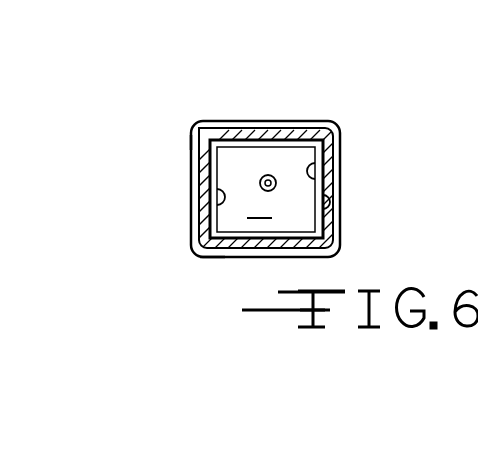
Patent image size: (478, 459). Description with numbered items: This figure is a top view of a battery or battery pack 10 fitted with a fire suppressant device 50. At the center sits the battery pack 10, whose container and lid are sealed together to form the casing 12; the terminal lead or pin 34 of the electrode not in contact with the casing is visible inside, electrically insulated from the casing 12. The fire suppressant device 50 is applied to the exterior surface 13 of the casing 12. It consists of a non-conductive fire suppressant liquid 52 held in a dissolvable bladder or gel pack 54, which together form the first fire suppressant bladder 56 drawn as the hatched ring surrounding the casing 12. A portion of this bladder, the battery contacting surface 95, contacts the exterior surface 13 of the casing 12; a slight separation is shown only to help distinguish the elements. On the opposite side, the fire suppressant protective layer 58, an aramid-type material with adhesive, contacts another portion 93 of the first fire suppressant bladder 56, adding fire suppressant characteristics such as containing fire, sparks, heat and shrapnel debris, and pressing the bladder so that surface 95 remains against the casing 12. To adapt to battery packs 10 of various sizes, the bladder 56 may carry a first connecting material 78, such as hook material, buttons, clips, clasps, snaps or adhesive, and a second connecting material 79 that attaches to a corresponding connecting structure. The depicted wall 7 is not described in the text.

The inner frame wall 7 is at (257, 236).
The battery pack 10 is at (260, 204).
The casing 12 is at (214, 207).
The exterior surface 13 is at (252, 150).
The terminal lead or pin 34 is at (276, 188).
The fire suppressant device 50 is at (357, 108).
The non-conductive fire suppressant liquid 52 is at (235, 135).
The bladder or gel pack 54 is at (290, 121).
The first fire suppressant bladder 56 is at (335, 192).
The fire suppressant protective layer 58 is at (211, 257).
The first connecting material 78 is at (195, 136).
The second connecting material 79 is at (196, 139).
The another portion of the first fire suppressant bladder 93 is at (312, 171).
The battery contacting surface 95 is at (326, 203).